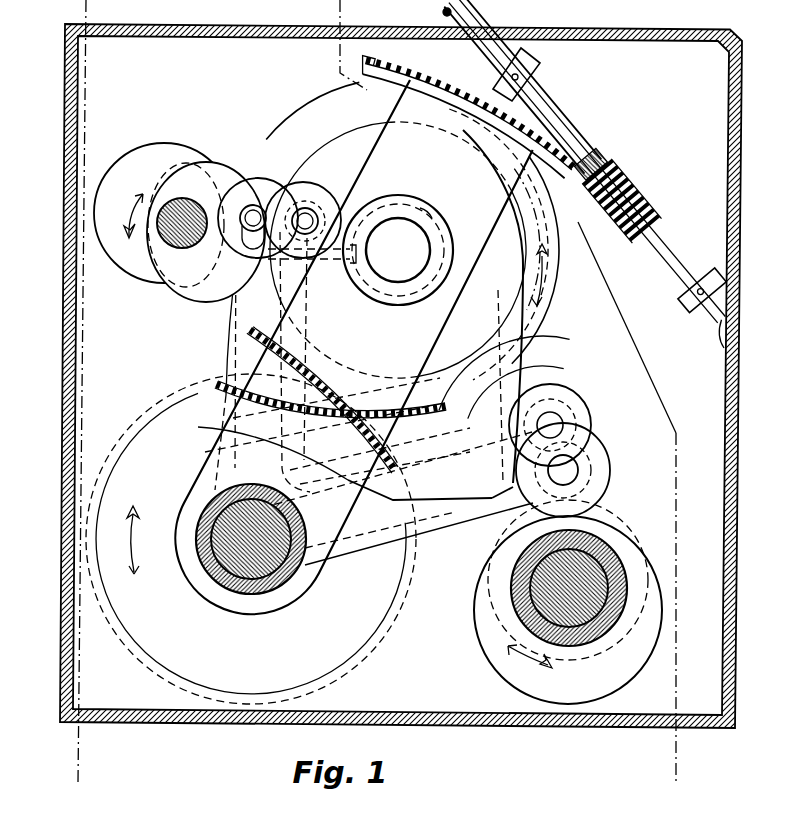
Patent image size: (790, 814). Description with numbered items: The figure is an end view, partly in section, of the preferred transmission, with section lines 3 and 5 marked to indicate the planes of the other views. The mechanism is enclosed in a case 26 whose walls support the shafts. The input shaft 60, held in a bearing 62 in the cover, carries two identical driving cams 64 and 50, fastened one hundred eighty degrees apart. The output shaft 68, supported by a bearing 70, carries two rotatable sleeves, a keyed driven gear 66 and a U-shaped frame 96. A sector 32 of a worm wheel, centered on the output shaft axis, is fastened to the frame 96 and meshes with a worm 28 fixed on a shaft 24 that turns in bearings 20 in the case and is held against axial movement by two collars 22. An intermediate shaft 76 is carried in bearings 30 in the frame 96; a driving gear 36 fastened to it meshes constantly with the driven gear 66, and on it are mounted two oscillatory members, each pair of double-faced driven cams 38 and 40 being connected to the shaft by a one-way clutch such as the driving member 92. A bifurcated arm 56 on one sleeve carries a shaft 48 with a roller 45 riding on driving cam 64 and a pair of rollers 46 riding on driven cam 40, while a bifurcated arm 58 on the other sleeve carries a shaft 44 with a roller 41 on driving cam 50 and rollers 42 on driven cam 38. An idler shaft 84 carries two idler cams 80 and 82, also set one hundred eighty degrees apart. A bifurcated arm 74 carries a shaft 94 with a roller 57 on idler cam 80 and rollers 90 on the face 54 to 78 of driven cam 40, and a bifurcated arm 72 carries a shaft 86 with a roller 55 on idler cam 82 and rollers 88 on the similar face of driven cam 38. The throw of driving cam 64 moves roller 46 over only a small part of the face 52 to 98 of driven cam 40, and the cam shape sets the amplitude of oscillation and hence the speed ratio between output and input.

The section line 3- 3 is at (345, 15).
The section line 5- 5 is at (80, 8).
The bearings 20 is at (505, 52).
The collars 22 is at (538, 64).
The shaft 24 is at (565, 118).
The case 26 is at (203, 37).
The worm 28 is at (628, 171).
The bearings 30 is at (402, 193).
The sector 32 is at (403, 72).
The driving gear 36 is at (547, 292).
The driven cam 38 is at (505, 346).
The driven cam 40 is at (523, 370).
The roller 41 is at (568, 417).
The rollers 42 is at (570, 381).
The shaft 44 is at (566, 414).
The roller 45 is at (593, 470).
The rollers 46 is at (603, 458).
The shaft 48 is at (575, 472).
The driving cam 50 is at (620, 507).
The face point 52 is at (490, 498).
The face point 54 is at (426, 506).
The bifurcated arm 56 is at (459, 524).
The bifurcated arm 58 is at (362, 527).
The input shaft 60 is at (547, 582).
The bearing 62 is at (508, 598).
The driving cam 64 is at (502, 657).
The driven gear 66 is at (353, 637).
The output shaft 68 is at (223, 593).
The bearing 70 is at (205, 551).
The bifurcated arm 72 is at (217, 417).
The bifurcated arm 74 is at (310, 327).
The intermediate shaft 76 is at (402, 273).
The face point 78 is at (352, 265).
The idler cam 80 is at (197, 293).
The idler cam 82 is at (145, 150).
The idler shaft 84 is at (180, 200).
The shaft 86 is at (235, 176).
The rollers 88 is at (265, 180).
The roller 55 is at (261, 187).
The rollers 90 is at (304, 216).
The roller 57 is at (302, 192).
The driving member 92 is at (353, 140).
The shaft 94 is at (317, 210).
The U-shaped frame 96 is at (365, 163).
The face point 98 is at (427, 213).